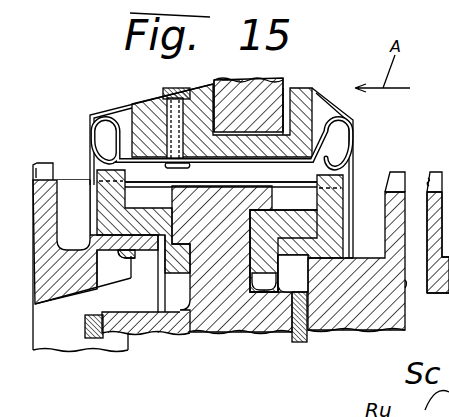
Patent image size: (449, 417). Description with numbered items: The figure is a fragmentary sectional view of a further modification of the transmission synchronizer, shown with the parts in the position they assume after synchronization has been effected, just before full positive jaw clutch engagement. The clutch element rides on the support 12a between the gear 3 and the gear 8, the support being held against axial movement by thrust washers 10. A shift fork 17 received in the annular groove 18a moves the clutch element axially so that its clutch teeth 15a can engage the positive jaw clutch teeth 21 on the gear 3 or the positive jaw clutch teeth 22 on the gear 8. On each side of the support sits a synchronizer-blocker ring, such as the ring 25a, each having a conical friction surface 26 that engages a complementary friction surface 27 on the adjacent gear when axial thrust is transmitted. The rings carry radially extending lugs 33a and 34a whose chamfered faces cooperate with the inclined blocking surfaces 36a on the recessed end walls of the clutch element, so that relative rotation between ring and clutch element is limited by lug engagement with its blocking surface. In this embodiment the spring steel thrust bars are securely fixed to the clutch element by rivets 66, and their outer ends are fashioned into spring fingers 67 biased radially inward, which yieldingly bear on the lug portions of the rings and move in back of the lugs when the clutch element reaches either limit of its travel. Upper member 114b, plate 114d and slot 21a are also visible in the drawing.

The gear 3 is at (40, 248).
The gear 8 is at (380, 330).
The thrust washers 10 is at (93, 340).
The support 12a is at (232, 330).
The clutch teeth 15a is at (219, 172).
The shift fork 17 is at (277, 83).
The annular groove 18a is at (236, 79).
The positive jaw clutch teeth 21 is at (43, 175).
The slot 21a is at (112, 222).
The positive jaw clutch teeth 22 is at (403, 172).
The synchronizer-blocker ring 25a is at (322, 222).
The conical friction surface 26 is at (100, 290).
The friction surface 27 is at (143, 255).
The lug 33a is at (97, 173).
The lug 34a is at (332, 182).
The blocking surfaces 36a is at (123, 112).
The rivets 66 is at (176, 92).
The spring fingers 67 is at (100, 140).
The upper block 114b is at (304, 88).
The plate 114d is at (290, 165).